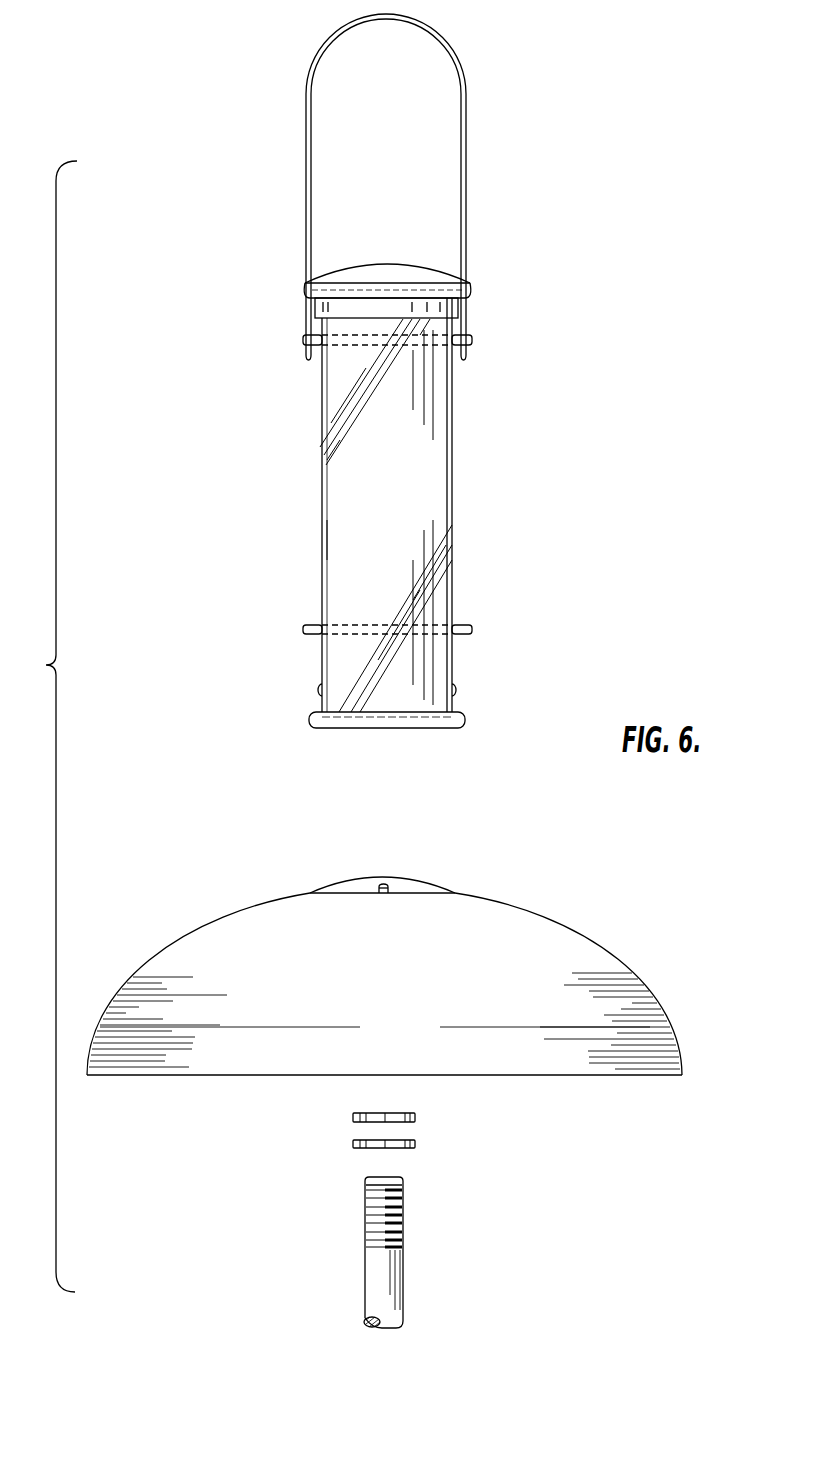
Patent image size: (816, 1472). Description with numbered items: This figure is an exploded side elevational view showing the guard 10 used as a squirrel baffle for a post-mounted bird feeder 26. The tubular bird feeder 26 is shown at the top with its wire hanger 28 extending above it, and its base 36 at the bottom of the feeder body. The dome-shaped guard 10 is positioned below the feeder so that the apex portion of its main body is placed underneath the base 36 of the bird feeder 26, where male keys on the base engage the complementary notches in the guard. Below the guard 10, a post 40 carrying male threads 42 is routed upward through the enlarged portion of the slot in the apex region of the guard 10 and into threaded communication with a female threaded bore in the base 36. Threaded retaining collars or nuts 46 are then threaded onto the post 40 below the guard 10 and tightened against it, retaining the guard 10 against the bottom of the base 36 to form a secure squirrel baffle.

The guard 10 is at (384, 963).
The bird feeder 26 is at (438, 488).
The wire hanger 28 is at (410, 187).
The base 36 is at (418, 700).
The post 40 is at (425, 1252).
The male threads 42 is at (426, 1218).
The threaded retaining collars or nuts 46 is at (430, 1130).